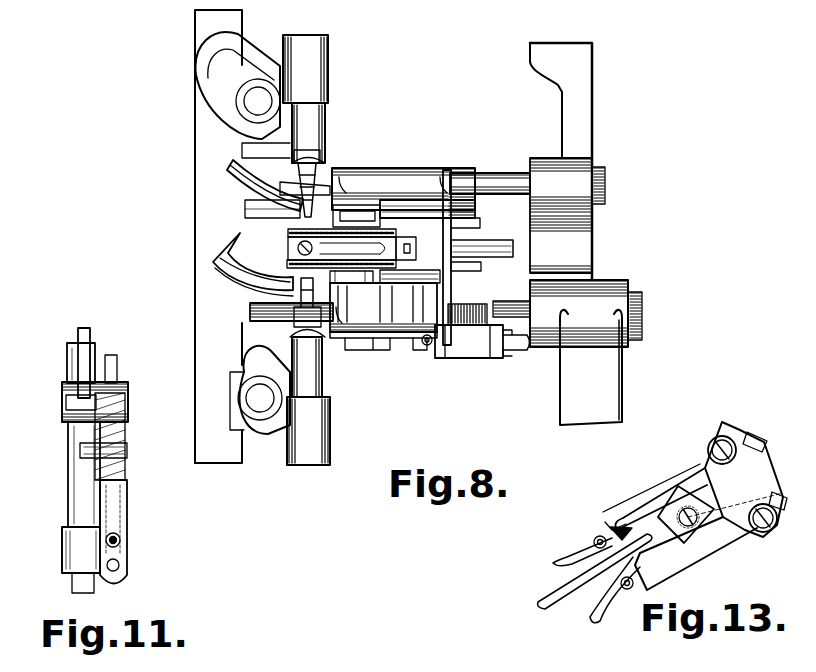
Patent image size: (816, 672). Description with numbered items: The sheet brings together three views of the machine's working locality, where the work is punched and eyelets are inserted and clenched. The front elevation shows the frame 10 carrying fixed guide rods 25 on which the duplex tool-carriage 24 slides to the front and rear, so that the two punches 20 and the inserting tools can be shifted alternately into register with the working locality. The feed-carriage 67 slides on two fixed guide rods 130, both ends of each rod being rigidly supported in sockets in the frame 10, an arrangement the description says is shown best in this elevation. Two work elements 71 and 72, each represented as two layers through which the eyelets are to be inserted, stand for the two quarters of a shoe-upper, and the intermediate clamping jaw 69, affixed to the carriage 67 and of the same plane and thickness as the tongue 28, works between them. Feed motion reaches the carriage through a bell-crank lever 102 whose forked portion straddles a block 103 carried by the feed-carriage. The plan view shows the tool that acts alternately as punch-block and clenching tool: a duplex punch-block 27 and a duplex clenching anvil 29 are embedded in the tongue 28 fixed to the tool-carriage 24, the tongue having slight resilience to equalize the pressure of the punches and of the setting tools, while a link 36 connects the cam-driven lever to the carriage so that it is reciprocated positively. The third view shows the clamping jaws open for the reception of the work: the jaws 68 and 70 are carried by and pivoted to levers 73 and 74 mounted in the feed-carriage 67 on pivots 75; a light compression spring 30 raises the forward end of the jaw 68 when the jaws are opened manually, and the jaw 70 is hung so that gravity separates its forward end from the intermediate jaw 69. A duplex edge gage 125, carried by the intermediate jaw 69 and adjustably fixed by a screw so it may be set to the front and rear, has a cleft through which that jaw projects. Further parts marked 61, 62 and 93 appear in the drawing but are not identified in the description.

In FIG. 8, the frame 10 is at (208, 445).
In FIG. 8, the punches 20 is at (303, 217).
In FIG. 8, the duplex tool-carriage 24 is at (328, 61).
In FIG. 11, the duplex tool-carriage 24 is at (123, 437).
In FIG. 8, the fixed guide rods 25 is at (244, 100).
In FIG. 11, the fixed guide rods 25 is at (78, 502).
In FIG. 11, the duplex punch-block 27 is at (119, 565).
In FIG. 8, the tongue 28 is at (288, 250).
In FIG. 11, the tongue 28 is at (127, 518).
In FIG. 11, the duplex clenching anvil 29 is at (120, 540).
In FIG. 13, the light compression spring 30 is at (623, 511).
In FIG. 11, the link 36 is at (80, 335).
In FIG. 8, the upper curved arm 61 is at (232, 181).
In FIG. 8, the lower curved arm 62 is at (228, 265).
In FIG. 8, the feed-carriage 67 is at (429, 346).
In FIG. 13, the feed-carriage 67 is at (737, 479).
In FIG. 8, the clamping jaw 68 is at (345, 217).
In FIG. 13, the clamping jaw 68 is at (570, 558).
In FIG. 8, the intermediate clamping jaw 69 is at (393, 337).
In FIG. 13, the intermediate clamping jaw 69 is at (545, 600).
In FIG. 8, the clamping jaw 70 is at (353, 337).
In FIG. 13, the clamping jaw 70 is at (594, 614).
In FIG. 8, the work element 71 is at (392, 229).
In FIG. 8, the work element 72 is at (413, 337).
In FIG. 8, the lever 73 is at (366, 218).
In FIG. 13, the lever 73 is at (643, 503).
In FIG. 8, the lever 74 is at (370, 337).
In FIG. 13, the lever 74 is at (693, 557).
In FIG. 8, the pivots 75 is at (453, 220).
In FIG. 13, the pivots 75 is at (711, 448).
In FIG. 8, the bar 93 is at (490, 243).
In FIG. 8, the bell-crank lever 102 is at (508, 358).
In FIG. 8, the block 103 is at (475, 351).
In FIG. 8, the duplex edge gage 125 is at (500, 165).
In FIG. 13, the duplex edge gage 125 is at (677, 503).
In FIG. 8, the fixed guide rods 130 is at (520, 173).